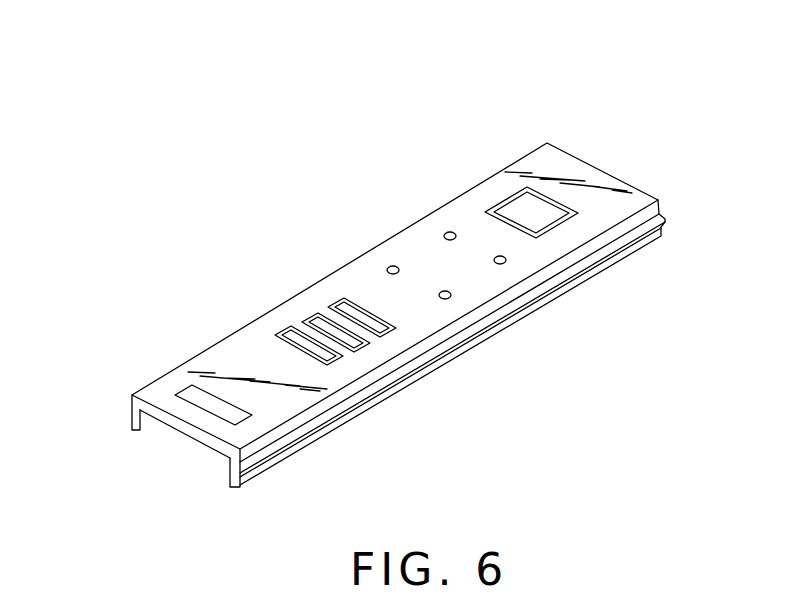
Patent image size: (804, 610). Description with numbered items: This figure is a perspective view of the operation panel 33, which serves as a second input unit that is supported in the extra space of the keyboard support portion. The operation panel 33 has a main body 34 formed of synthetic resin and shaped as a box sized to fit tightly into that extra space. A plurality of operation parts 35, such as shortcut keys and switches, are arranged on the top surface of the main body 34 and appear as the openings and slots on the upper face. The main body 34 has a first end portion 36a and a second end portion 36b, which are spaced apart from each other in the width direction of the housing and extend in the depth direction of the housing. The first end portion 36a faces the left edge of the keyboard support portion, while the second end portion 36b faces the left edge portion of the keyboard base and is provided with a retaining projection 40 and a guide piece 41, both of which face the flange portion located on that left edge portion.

The operation panel 33 is at (347, 305).
The main body 34 is at (417, 225).
The operation parts 35 is at (543, 218).
The first end portion 36a is at (132, 417).
The second end portion 36b is at (231, 460).
The retaining projection 40 is at (523, 310).
The guide piece 41 is at (308, 446).